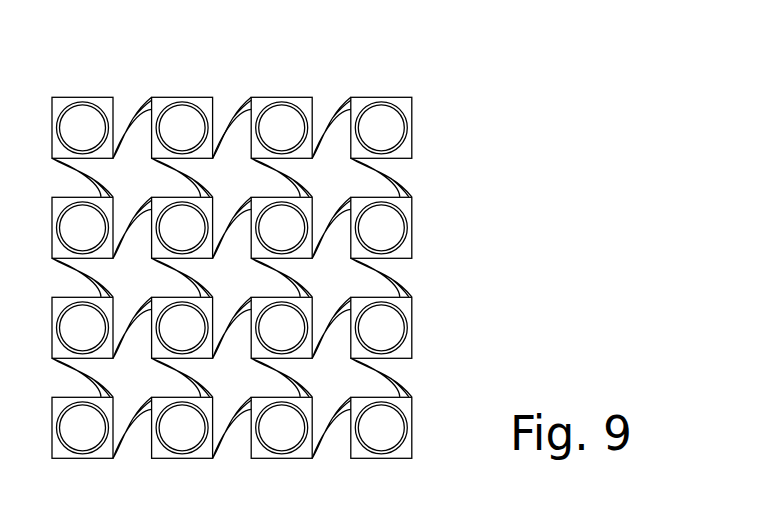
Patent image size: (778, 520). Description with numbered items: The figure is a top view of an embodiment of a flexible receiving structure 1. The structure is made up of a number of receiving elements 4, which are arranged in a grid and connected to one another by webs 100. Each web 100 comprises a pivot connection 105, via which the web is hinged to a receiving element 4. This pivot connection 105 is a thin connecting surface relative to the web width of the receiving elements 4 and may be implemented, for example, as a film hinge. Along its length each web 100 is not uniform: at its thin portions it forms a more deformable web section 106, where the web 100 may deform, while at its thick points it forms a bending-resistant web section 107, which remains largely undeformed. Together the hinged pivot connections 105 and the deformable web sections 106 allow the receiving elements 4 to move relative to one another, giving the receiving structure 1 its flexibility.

The flexible receiving structure 1 is at (282, 229).
The receiving element 4 is at (400, 105).
The web 100 is at (282, 229).
The pivot connection 105 is at (248, 102).
The more deformable web section 106 is at (243, 102).
The bending-resistant web section 107 is at (207, 79).